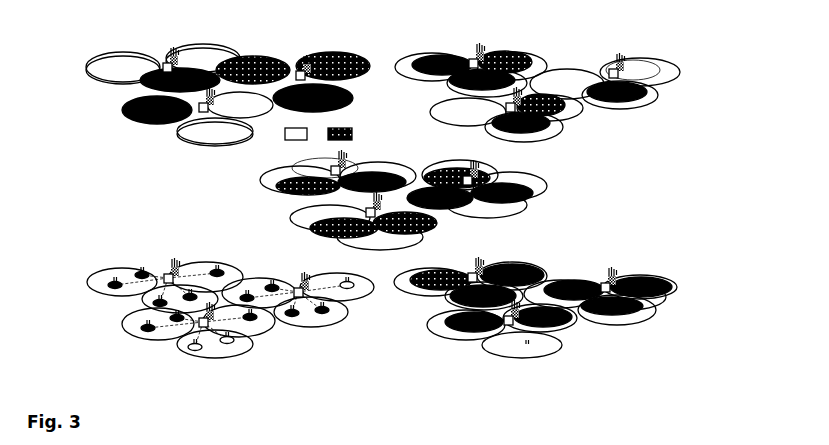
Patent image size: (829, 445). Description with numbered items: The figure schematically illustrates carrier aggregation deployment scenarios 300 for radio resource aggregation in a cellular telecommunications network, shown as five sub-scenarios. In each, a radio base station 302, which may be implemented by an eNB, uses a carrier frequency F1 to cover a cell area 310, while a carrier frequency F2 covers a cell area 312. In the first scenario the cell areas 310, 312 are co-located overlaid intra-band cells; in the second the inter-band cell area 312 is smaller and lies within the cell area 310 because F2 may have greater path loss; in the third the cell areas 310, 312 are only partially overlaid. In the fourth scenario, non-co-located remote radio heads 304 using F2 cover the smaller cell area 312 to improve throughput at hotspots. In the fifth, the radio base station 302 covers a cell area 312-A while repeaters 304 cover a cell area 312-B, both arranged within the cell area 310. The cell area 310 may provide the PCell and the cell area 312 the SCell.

The carrier aggregation deployment scenarios 300 is at (57, 34).
The radio base station 302 is at (173, 55).
The remote radio heads 304 is at (347, 308).
The cell area 310 is at (127, 122).
The cell area 312 is at (132, 92).
The cell area 312-A is at (632, 275).
The cell area 312-B is at (677, 293).